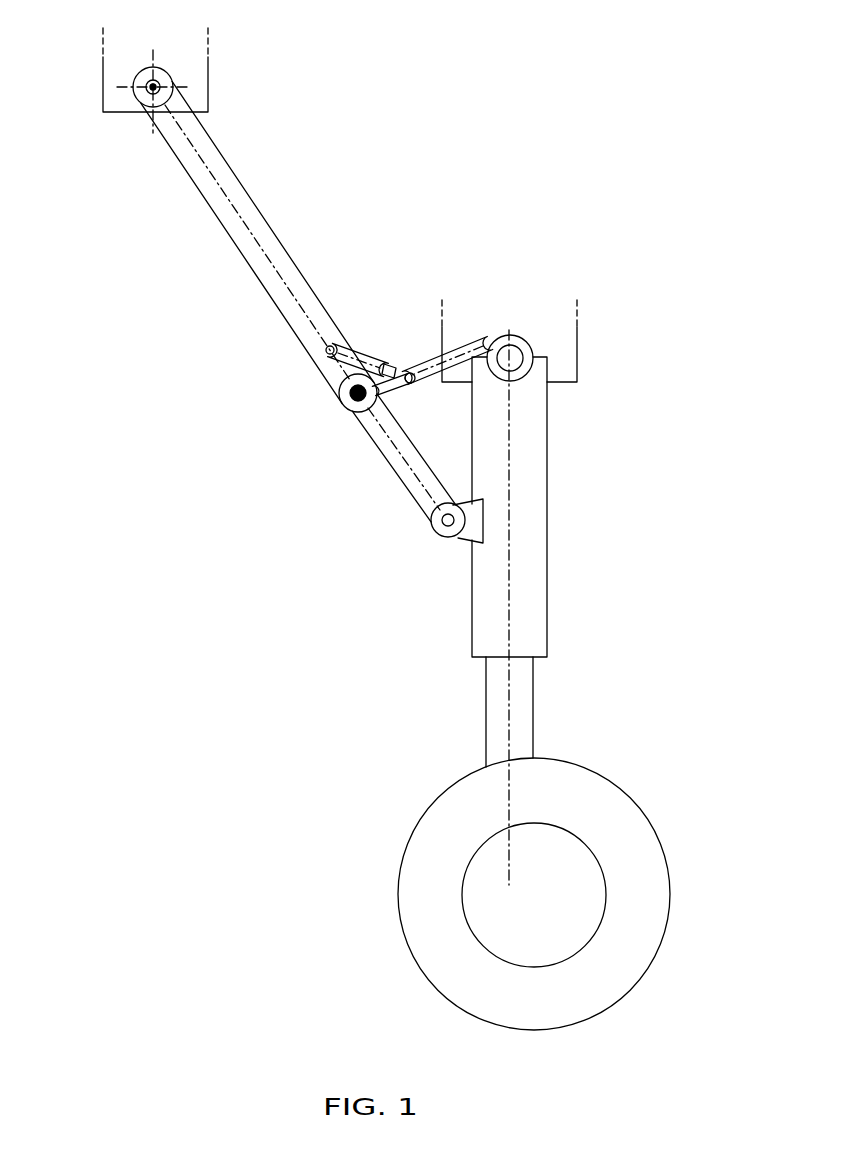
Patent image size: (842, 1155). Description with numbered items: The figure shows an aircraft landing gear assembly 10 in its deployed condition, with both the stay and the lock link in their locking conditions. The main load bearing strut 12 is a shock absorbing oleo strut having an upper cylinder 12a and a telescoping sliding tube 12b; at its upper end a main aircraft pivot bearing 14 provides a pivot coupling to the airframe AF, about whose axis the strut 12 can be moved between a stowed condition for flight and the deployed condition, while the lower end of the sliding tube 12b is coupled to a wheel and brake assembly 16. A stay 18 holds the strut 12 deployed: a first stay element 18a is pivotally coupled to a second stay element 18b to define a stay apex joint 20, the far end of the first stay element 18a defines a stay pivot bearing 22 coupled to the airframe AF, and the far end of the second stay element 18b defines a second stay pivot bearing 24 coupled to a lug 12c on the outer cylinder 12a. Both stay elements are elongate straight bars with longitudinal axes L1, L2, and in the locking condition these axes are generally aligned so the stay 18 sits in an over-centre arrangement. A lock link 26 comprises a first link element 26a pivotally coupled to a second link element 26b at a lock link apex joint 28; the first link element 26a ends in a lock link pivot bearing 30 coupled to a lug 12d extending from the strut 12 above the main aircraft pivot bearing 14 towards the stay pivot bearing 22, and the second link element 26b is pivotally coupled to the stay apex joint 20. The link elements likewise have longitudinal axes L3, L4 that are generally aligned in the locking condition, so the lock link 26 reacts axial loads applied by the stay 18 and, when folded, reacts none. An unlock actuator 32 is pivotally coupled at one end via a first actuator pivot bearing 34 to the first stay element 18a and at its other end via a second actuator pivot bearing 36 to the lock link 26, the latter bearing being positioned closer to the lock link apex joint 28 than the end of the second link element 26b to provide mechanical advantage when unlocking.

The aircraft landing gear assembly 10 is at (686, 98).
The main load bearing strut 12 is at (550, 535).
The upper cylinder 12a is at (537, 597).
The sliding tube 12b is at (522, 725).
The lug 12c is at (470, 532).
The lug 12d is at (542, 358).
The main aircraft pivot bearing 14 is at (513, 362).
The wheel and brake assembly 16 is at (650, 808).
The stay 18 is at (280, 232).
The first stay element 18a is at (257, 242).
The second stay element 18b is at (401, 459).
The stay apex joint 20 is at (350, 400).
The stay pivot bearing 22 is at (143, 93).
The second stay pivot bearing 24 is at (440, 530).
The lock link 26 is at (432, 351).
The first link element 26a is at (460, 352).
The second link element 26b is at (375, 400).
The lock link apex joint 28 is at (420, 355).
The lock link pivot bearing 30 is at (503, 335).
The unlock actuator 32 is at (328, 361).
The first actuator pivot bearing 34 is at (322, 347).
The second actuator pivot bearing 36 is at (413, 385).
The airframe AF is at (193, 46).
The longitudinal axis L1 is at (272, 268).
The longitudinal axis L2 is at (408, 458).
The longitudinal axis L3 is at (475, 370).
The longitudinal axis L4 is at (359, 343).